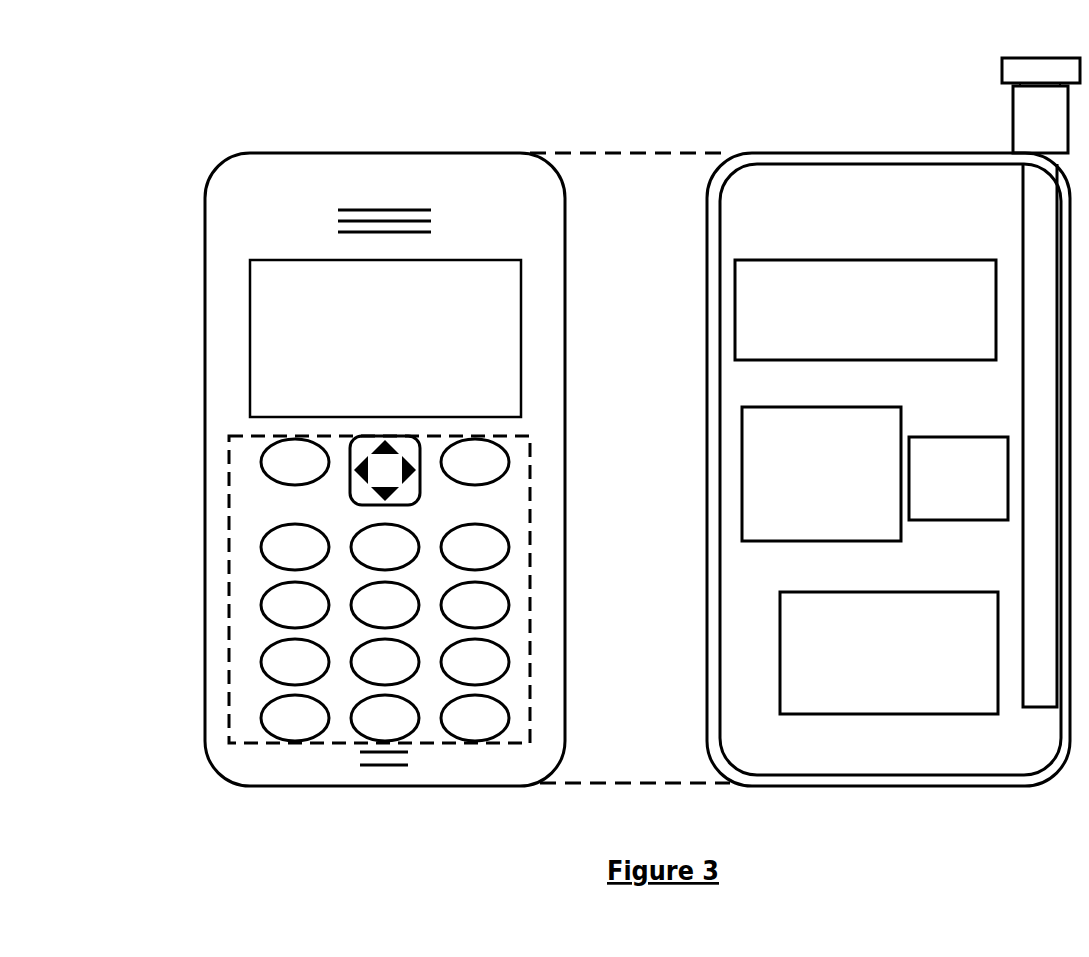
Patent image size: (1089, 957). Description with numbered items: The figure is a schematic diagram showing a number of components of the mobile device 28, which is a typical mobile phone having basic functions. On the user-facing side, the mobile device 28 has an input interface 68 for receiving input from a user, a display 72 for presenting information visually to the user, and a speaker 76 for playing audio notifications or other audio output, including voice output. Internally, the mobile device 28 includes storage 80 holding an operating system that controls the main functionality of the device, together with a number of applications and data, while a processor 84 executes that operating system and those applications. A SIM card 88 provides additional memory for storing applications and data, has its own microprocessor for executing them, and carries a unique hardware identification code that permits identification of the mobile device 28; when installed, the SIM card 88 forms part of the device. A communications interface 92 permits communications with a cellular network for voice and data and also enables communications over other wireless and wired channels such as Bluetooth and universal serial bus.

The mobile device 28 is at (182, 145).
The speaker 76 is at (372, 183).
The display 72 is at (293, 352).
The input interface 68 is at (230, 582).
The storage 80 is at (865, 310).
The processor 84 is at (821, 474).
The SIM card 88 is at (958, 478).
The communications interface 92 is at (889, 653).